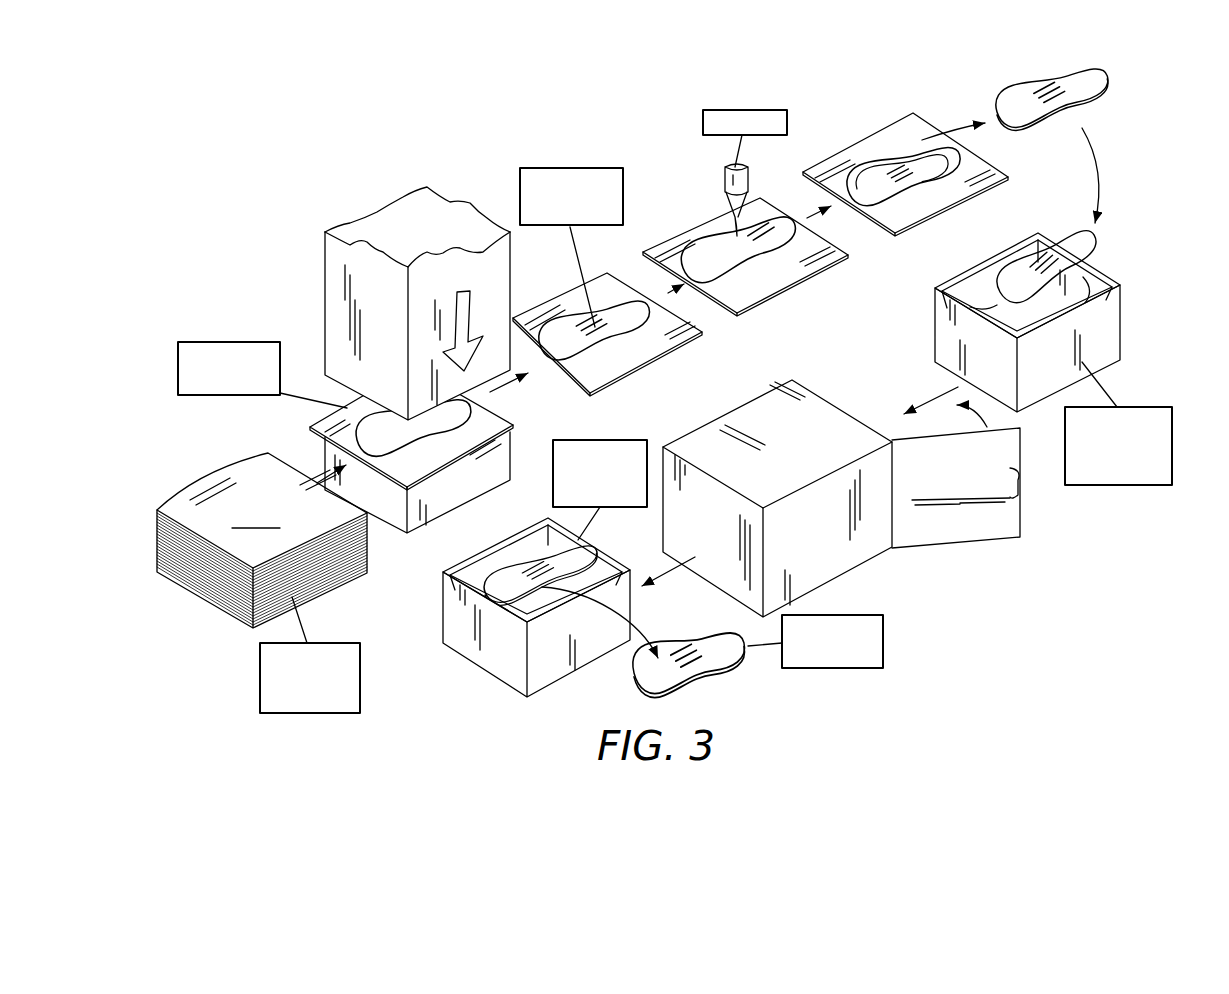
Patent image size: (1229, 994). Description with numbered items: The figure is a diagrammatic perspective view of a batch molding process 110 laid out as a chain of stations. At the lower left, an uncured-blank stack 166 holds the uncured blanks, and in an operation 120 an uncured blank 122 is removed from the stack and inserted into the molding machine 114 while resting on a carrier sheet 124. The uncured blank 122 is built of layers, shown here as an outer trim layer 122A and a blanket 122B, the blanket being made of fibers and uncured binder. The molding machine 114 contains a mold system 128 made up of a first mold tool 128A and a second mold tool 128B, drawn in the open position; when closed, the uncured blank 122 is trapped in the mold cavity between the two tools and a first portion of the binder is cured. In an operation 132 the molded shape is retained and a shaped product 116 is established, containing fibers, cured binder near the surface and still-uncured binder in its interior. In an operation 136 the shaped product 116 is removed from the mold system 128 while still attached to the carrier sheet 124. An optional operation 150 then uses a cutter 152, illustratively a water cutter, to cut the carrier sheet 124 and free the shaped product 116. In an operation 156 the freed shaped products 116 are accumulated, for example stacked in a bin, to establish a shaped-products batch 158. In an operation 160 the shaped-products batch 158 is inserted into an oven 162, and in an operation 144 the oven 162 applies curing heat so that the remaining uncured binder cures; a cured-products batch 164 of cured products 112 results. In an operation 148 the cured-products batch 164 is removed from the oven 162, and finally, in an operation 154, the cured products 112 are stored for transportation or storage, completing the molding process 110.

The molding process 110 is at (1132, 106).
The cured product 112 is at (883, 640).
The molding machine 114 is at (400, 403).
The shaped product 116 is at (552, 168).
The operation of inserting the uncured blank 120 is at (426, 512).
The uncured blank 122 is at (210, 342).
The outer trim layer 122A is at (320, 418).
The blanket 122B is at (480, 495).
The carrier sheet 124 is at (252, 557).
The mold system 128 is at (395, 505).
The first mold tool 128A is at (352, 377).
The second mold tool 128B is at (383, 485).
The operation of retaining the molded shape 132 is at (598, 399).
The operation of removing the shaped product 136 is at (670, 364).
The operation of applying curing heat 144 is at (881, 499).
The operation of removing the cured-products batch 148 is at (640, 571).
The operation of separating the shaped product 150 is at (761, 209).
The cutter 152 is at (752, 110).
The operation of storing the cured products 154 is at (604, 681).
The operation of accumulating shaped products 156 is at (1137, 361).
The shaped-products batch 158 is at (1067, 359).
The operation of inserting the batch into the oven 160 is at (1039, 514).
The oven 162 is at (800, 443).
The cured-products batch 164 is at (458, 661).
The uncured-blank stack 166 is at (322, 604).